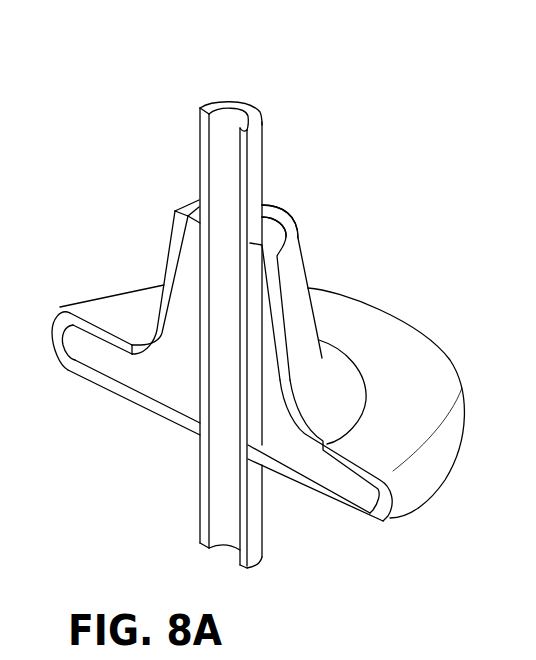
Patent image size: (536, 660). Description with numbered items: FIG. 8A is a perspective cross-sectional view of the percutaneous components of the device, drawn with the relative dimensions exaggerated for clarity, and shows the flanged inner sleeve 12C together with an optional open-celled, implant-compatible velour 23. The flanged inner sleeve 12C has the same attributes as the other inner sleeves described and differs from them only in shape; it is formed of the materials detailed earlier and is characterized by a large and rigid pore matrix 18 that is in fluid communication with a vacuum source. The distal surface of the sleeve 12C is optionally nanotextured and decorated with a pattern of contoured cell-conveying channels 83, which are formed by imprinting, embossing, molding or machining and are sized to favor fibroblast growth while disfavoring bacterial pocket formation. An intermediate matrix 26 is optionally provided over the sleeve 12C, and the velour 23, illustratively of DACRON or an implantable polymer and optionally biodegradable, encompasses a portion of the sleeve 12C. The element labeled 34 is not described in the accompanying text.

The post 34 is at (229, 124).
The cell-conveying channel 83 is at (286, 224).
The intermediate matrix 26 is at (312, 266).
The velour 23 is at (293, 322).
The flanged inner sleeve 12C is at (291, 409).
The pore matrix 18 is at (372, 498).